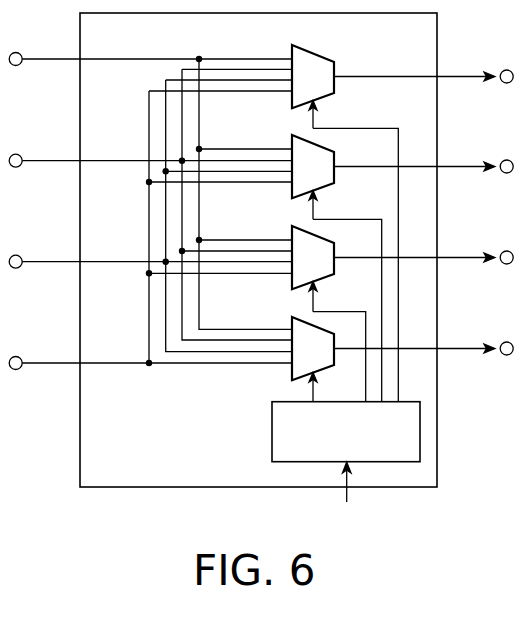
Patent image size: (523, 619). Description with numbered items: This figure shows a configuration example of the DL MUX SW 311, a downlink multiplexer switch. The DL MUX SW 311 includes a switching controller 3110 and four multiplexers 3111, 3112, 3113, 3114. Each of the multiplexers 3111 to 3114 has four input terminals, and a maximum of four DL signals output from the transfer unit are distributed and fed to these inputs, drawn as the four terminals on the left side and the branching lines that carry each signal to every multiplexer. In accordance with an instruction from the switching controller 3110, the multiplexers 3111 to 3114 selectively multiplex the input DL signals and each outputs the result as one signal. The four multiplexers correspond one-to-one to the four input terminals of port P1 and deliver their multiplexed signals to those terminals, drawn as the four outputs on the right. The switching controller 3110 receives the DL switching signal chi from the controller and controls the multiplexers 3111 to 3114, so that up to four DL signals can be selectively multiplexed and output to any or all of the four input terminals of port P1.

The DL MUX SW 311 is at (80, 418).
The multiplexer 3111 is at (292, 46).
The multiplexer 3112 is at (292, 136).
The multiplexer 3113 is at (292, 226).
The multiplexer 3114 is at (292, 317).
The switching controller 3110 is at (272, 410).